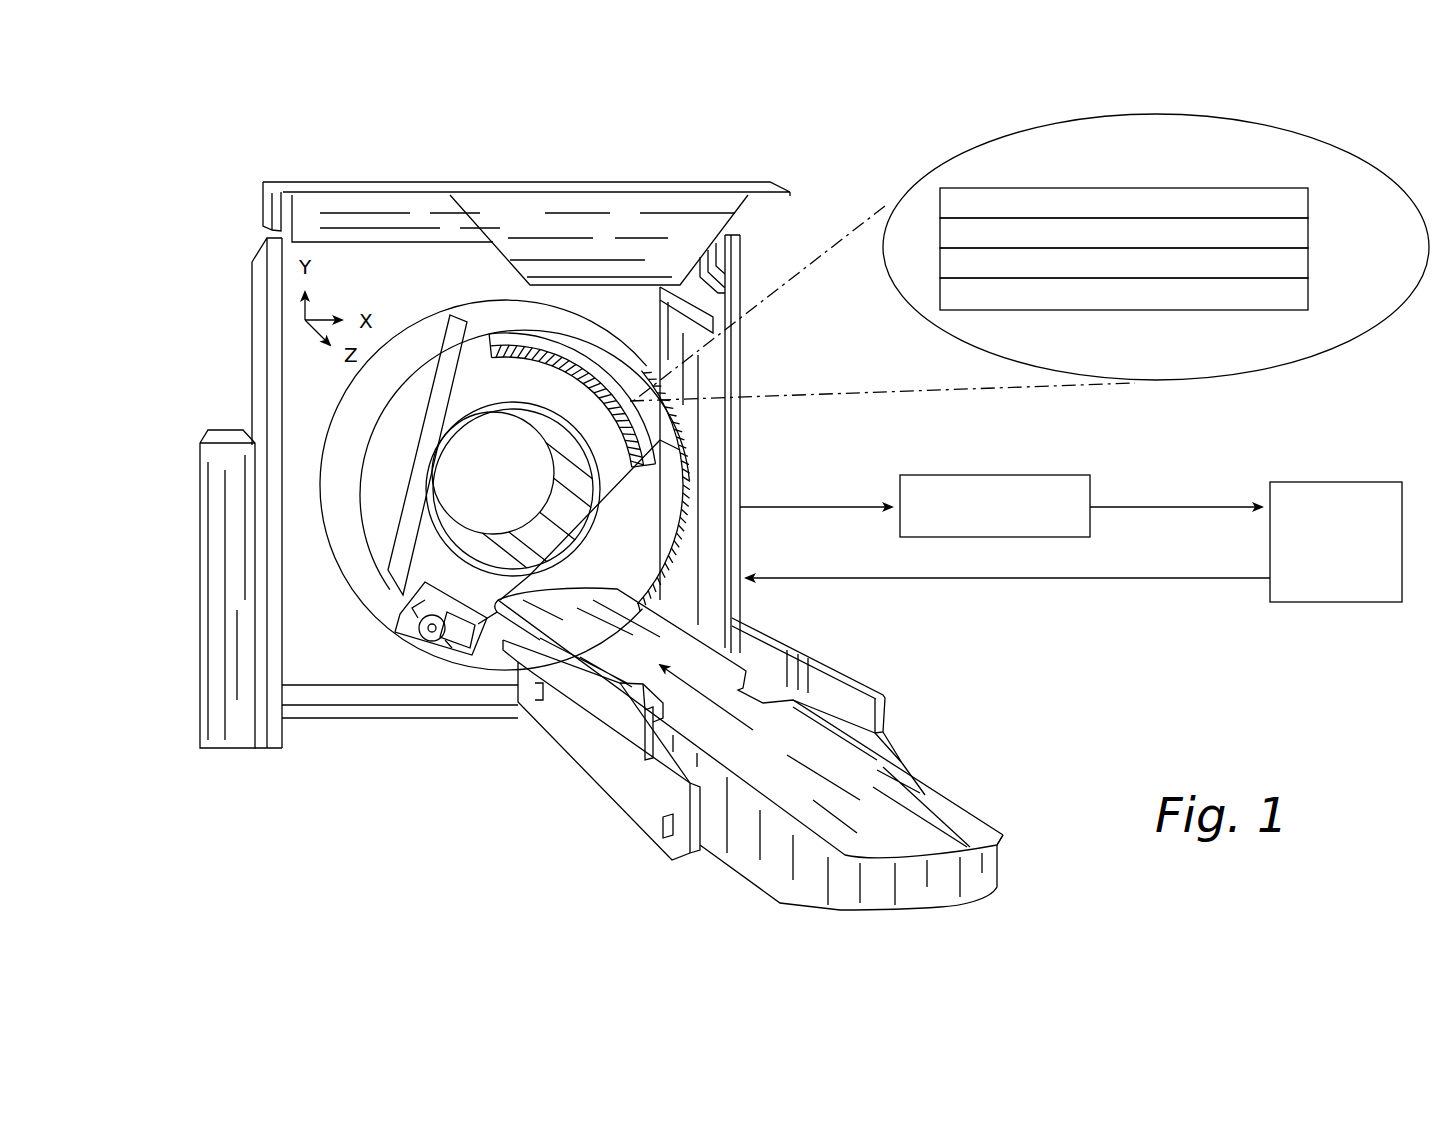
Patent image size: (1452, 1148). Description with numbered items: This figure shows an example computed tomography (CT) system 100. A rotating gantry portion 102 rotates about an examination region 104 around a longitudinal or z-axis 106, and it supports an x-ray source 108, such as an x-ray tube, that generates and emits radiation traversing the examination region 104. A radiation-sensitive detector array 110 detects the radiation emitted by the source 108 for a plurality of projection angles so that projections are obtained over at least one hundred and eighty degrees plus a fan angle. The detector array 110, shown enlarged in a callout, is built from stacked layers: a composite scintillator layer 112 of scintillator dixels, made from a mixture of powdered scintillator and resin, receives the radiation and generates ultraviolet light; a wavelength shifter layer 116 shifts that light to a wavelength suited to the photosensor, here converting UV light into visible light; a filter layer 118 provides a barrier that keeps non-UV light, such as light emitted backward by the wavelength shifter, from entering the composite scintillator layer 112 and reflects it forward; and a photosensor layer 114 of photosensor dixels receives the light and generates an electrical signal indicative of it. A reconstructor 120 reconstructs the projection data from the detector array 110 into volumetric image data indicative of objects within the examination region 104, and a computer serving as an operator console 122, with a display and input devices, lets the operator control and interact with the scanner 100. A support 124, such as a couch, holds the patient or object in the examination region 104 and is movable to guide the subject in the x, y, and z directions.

The computed tomography (CT) system 100 is at (260, 150).
The rotating gantry portion 102 is at (477, 385).
The examination region 104 is at (512, 480).
The longitudinal or z-axis 106 is at (812, 753).
The x-ray source 108 is at (425, 640).
The radiation-sensitive detector array 110 is at (646, 441).
The composite scintillator layer 112 is at (1308, 207).
The photosensor layer 114 is at (1308, 293).
The wavelength shifter layer 116 is at (1308, 265).
The filter layer 118 is at (1308, 235).
The reconstructor 120 is at (1013, 474).
The operator console 122 is at (1325, 482).
The support 124 is at (928, 824).